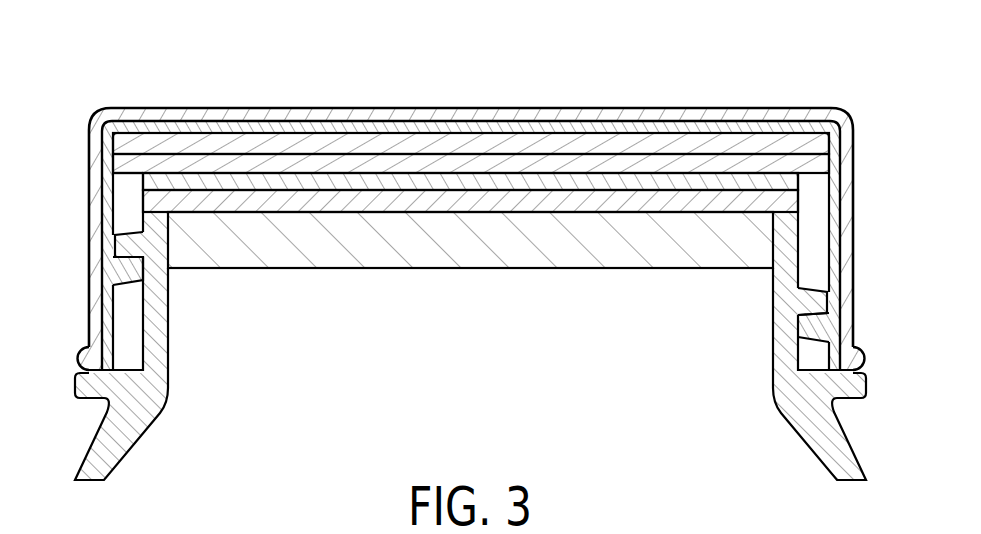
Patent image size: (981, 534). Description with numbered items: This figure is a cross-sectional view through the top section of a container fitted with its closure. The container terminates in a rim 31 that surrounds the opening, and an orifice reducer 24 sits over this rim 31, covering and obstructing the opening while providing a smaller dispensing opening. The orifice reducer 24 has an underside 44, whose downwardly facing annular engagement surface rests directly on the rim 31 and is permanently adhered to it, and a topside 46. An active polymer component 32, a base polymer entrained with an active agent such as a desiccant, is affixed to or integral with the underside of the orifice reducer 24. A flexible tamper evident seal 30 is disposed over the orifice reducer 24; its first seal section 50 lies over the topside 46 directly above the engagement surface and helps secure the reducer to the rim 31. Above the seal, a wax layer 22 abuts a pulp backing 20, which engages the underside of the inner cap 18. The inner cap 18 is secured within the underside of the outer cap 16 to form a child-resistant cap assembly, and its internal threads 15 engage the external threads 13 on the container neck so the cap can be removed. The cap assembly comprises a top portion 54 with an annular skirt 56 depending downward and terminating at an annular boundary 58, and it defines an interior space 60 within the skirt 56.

The external threads 13 is at (133, 236).
The internal threads 15 is at (128, 275).
The outer cap 16 is at (848, 172).
The inner cap 18 is at (693, 129).
The pulp backing 20 is at (503, 142).
The wax layer 22 is at (388, 167).
The orifice reducer 24 is at (177, 200).
The flexible tamper evident seal 30 is at (220, 183).
The rim 31 is at (790, 182).
The active polymer component 32 is at (628, 242).
The underside 44 is at (362, 205).
The topside 46 is at (578, 188).
The first seal section 50 is at (167, 183).
The top portion 54 is at (728, 115).
The annular skirt 56 is at (842, 213).
The annular boundary 58 is at (860, 389).
The interior space 60 is at (128, 187).